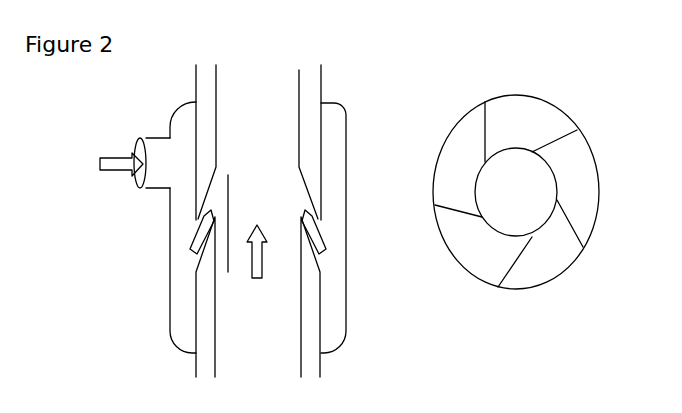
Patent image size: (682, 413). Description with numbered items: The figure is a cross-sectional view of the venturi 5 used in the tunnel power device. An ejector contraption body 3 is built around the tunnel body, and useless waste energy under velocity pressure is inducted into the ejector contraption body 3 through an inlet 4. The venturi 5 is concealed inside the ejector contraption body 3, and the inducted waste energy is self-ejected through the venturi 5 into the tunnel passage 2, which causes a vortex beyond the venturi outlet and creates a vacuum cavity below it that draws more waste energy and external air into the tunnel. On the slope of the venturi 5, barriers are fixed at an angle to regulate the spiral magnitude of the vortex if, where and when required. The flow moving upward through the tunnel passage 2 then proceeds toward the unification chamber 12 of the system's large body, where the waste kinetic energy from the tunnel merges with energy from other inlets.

The tunnel passage 2 is at (257, 277).
The ejector contraption body 3 is at (352, 317).
The inlet 4 is at (124, 163).
The venturi 5 is at (181, 233).
The unification chamber 12 is at (258, 221).